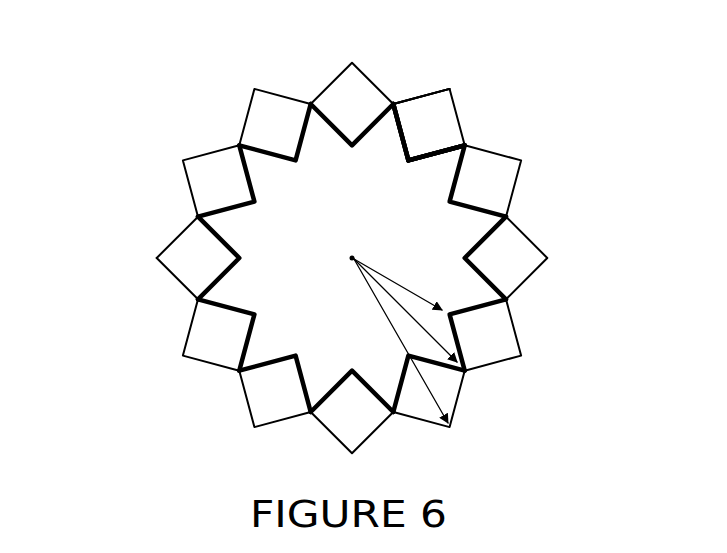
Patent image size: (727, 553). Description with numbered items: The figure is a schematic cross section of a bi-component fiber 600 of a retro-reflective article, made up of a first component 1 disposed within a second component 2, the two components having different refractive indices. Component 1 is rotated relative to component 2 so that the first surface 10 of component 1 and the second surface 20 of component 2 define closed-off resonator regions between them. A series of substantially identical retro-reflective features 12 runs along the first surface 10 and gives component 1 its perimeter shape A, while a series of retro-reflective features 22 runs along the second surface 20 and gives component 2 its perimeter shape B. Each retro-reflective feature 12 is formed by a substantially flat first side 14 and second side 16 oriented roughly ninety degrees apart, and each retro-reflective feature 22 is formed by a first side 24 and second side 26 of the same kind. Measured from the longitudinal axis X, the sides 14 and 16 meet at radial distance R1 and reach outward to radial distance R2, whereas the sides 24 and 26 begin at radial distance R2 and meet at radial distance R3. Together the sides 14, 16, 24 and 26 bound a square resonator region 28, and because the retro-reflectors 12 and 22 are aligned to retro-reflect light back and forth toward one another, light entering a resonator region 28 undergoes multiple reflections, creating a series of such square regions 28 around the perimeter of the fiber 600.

The bi-component fiber 600 is at (168, 53).
The first component 1 is at (242, 217).
The first surface 10 is at (213, 216).
The second component 2 is at (180, 240).
The second surface 20 is at (162, 250).
The retro-reflective feature 12 is at (395, 146).
The retro-reflective feature 22 is at (403, 90).
The first side 24 is at (426, 96).
The first side 14 is at (400, 123).
The second side 16 is at (415, 155).
The second side 26 is at (458, 142).
The square resonator region 28 is at (438, 146).
The perimeter shape A is at (212, 308).
The perimeter shape B is at (198, 363).
The longitudinal axis X is at (355, 293).
The radial distance R1 is at (398, 284).
The radial distance R2 is at (405, 310).
The radial distance R3 is at (401, 341).